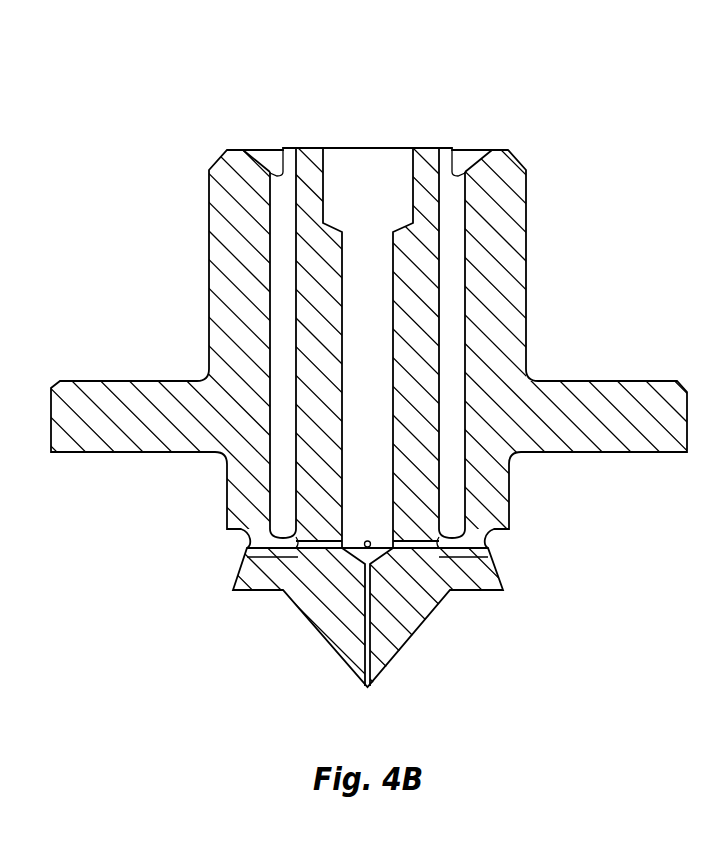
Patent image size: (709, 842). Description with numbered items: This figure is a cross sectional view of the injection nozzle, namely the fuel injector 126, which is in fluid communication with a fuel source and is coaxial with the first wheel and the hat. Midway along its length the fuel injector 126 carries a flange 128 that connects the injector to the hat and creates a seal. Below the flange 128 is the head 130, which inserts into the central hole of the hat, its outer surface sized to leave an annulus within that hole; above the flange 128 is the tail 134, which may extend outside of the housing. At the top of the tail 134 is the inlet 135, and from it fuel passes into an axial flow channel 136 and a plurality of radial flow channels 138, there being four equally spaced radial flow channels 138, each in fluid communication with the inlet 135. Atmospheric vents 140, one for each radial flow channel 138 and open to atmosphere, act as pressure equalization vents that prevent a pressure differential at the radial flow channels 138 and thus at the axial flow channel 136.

The fuel injector 126 is at (566, 124).
The flange 128 is at (603, 380).
The head 130 is at (512, 512).
The tail 134 is at (528, 268).
The inlet 135 is at (363, 175).
The axial flow channel 136 is at (367, 689).
The radial flow channels 138 is at (282, 547).
The atmospheric vents 140 is at (288, 182).